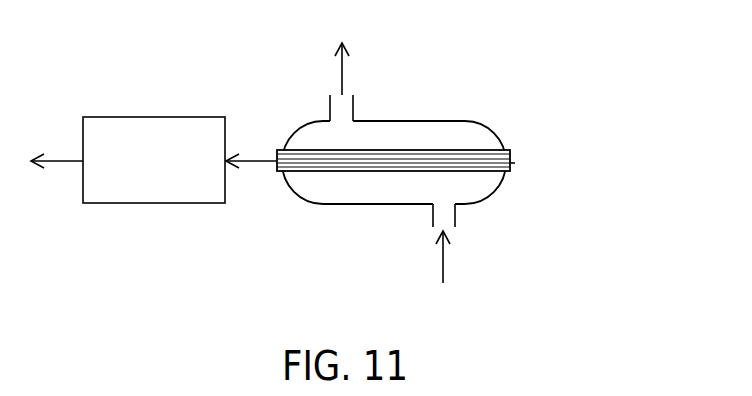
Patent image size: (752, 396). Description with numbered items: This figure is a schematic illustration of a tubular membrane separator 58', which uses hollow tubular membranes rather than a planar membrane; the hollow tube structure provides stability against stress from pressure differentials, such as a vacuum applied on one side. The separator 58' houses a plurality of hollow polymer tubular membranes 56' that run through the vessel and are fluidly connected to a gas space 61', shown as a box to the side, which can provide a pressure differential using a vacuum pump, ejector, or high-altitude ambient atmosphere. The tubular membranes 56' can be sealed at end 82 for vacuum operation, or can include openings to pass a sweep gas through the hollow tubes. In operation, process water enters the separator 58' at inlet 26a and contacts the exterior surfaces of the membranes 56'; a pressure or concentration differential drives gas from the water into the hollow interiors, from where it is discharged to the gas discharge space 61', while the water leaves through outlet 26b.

The gas space 61' is at (137, 104).
The tubular membrane separator 58' is at (429, 133).
The hollow polymer tubular membranes 56' is at (393, 88).
The end 82 is at (510, 163).
The outlet 26b is at (341, 72).
The inlet 26a is at (443, 256).